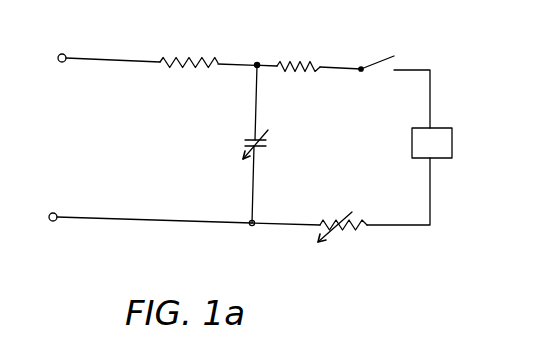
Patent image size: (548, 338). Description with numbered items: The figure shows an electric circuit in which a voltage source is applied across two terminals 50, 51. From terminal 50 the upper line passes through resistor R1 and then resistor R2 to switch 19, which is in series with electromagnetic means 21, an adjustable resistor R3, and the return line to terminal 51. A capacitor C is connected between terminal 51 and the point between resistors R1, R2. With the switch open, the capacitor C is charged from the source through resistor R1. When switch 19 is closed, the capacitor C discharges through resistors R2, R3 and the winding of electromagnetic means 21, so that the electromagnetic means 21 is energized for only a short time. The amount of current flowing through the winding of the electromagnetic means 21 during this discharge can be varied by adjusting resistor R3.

The terminal 50 is at (65, 55).
The terminal 51 is at (53, 221).
The switch 19 is at (387, 64).
The electromagnetic means 21 is at (443, 140).
The resistor R1 is at (189, 51).
The resistor R2 is at (298, 54).
The adjustable resistor R3 is at (350, 234).
The capacitor C is at (247, 144).